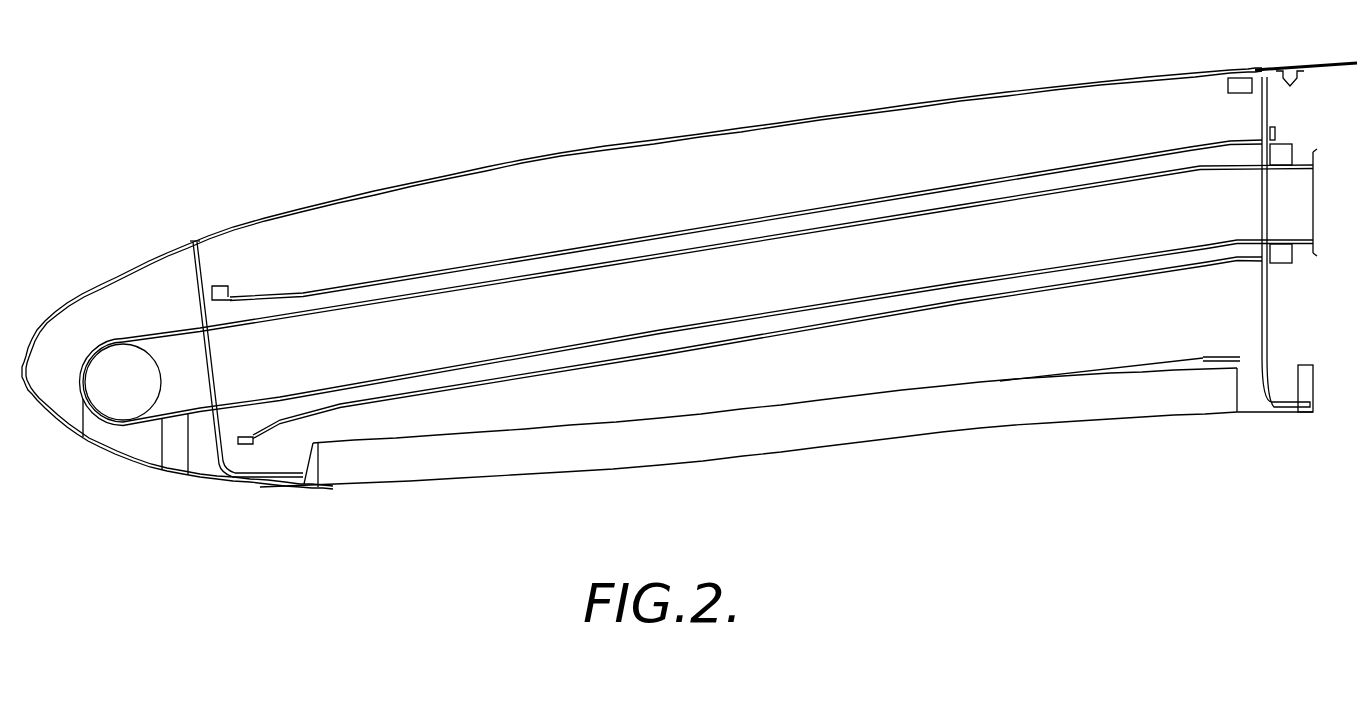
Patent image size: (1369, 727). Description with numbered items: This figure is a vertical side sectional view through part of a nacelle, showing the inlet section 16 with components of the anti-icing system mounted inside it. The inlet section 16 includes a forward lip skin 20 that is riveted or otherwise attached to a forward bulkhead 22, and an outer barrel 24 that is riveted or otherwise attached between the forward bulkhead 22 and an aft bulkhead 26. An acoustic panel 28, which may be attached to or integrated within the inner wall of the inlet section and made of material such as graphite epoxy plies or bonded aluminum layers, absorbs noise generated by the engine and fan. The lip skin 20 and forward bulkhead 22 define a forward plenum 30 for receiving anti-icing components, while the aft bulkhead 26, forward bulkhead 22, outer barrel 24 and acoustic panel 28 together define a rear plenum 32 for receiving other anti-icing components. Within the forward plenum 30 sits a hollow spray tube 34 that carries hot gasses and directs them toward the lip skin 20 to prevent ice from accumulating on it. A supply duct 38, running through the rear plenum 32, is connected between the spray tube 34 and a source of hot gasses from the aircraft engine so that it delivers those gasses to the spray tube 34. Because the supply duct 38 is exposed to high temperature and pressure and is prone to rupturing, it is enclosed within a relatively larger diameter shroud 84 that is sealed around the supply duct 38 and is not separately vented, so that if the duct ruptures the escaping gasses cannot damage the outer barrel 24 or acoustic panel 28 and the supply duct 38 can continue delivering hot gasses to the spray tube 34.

The inlet section 16 is at (236, 200).
The forward lip skin 20 is at (90, 292).
The forward bulkhead 22 is at (197, 270).
The outer barrel 24 is at (822, 114).
The aft bulkhead 26 is at (1270, 90).
The acoustic panel 28 is at (788, 435).
The forward plenum 30 is at (135, 383).
The rear plenum 32 is at (916, 143).
The spray tube 34 is at (100, 421).
The supply duct 38 is at (470, 283).
The shroud 84 is at (650, 237).